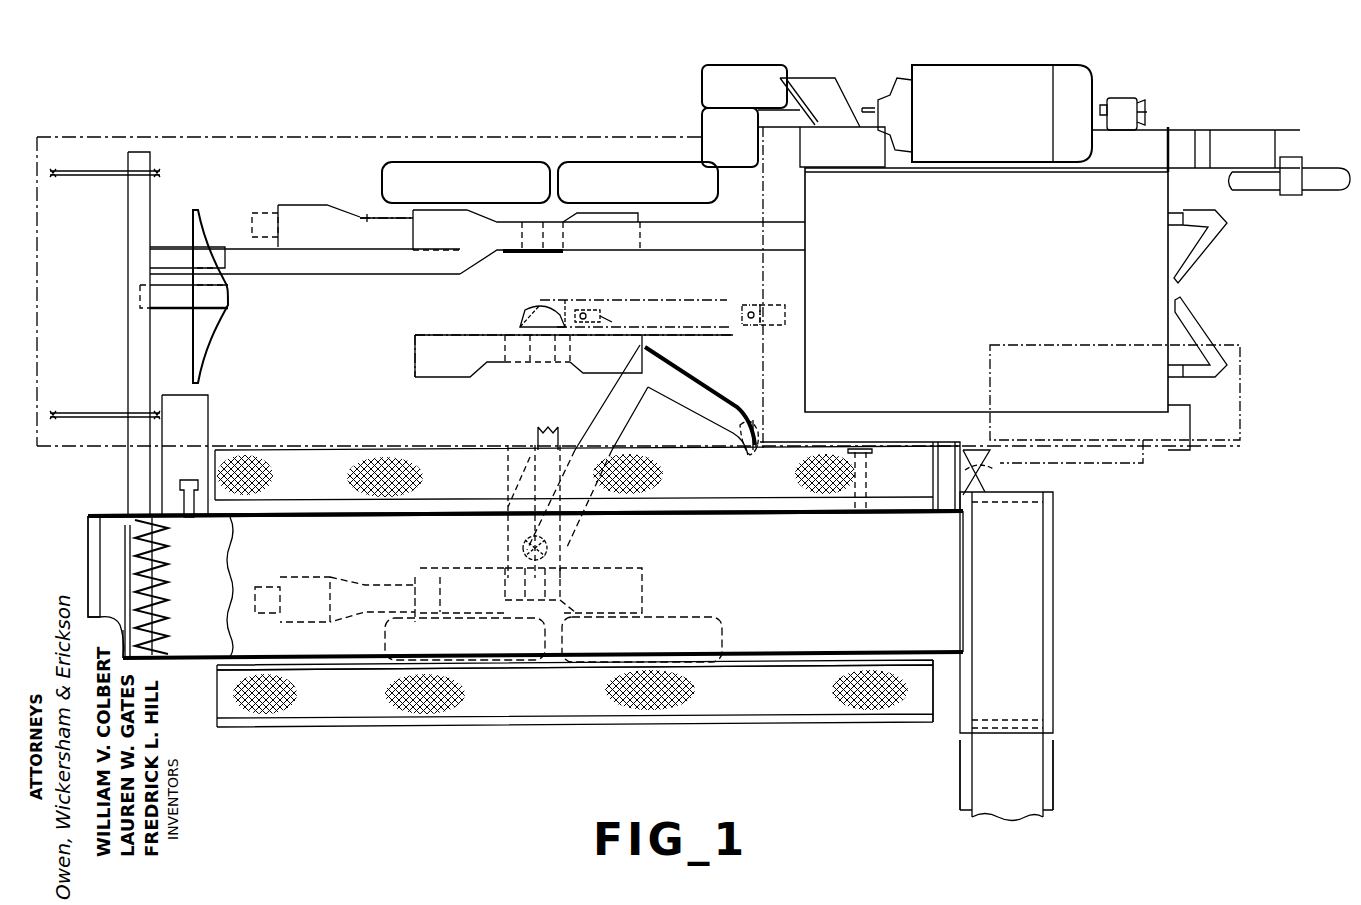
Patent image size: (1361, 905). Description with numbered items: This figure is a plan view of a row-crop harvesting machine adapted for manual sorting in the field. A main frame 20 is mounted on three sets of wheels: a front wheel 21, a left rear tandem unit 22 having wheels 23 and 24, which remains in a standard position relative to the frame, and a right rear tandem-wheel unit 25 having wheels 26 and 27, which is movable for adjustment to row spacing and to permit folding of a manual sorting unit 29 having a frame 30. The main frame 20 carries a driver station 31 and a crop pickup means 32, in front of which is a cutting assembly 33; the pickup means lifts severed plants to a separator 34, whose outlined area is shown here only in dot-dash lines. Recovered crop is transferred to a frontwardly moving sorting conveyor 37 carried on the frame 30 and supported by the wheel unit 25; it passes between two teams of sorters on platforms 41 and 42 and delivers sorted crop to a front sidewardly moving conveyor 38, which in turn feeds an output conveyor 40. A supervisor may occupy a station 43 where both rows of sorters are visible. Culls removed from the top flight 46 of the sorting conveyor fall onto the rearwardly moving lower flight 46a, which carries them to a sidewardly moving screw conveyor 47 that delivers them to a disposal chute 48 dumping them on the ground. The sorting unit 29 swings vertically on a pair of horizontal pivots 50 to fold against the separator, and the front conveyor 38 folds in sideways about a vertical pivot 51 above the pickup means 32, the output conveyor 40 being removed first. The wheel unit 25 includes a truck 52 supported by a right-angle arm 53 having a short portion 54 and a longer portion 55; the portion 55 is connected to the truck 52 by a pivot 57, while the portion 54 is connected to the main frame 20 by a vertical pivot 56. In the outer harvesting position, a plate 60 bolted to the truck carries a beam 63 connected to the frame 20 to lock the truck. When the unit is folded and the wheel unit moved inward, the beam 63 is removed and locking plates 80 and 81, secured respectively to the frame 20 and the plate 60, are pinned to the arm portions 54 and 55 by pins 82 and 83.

The main frame 20 is at (819, 410).
The front wheel 21 is at (1322, 168).
The left rear tandem unit 22 is at (561, 142).
The wheel 23 is at (383, 181).
The wheel 24 is at (636, 166).
The right rear tandem-wheel unit 25 is at (510, 372).
The wheel 26 is at (383, 645).
The wheel 27 is at (722, 641).
The manual sorting unit 29 is at (357, 746).
The frame 30 is at (208, 668).
The driver station 31 is at (703, 120).
The crop pickup means 32 is at (1180, 392).
The cutting assembly 33 is at (1185, 306).
The separator 34 is at (421, 135).
The sorting conveyor 37 is at (420, 514).
The front sidewardly moving conveyor 38 is at (990, 353).
The output conveyor 40 is at (1035, 772).
The platform 41 is at (490, 705).
The platform 42 is at (490, 468).
The station 43 is at (916, 707).
The top flight 46 is at (525, 568).
The lower flight 46a is at (185, 590).
The screw conveyor 47 is at (172, 608).
The disposal chute 48 is at (165, 500).
The horizontal pivots 50 is at (194, 482).
The vertical pivot 51 is at (990, 468).
The truck 52 is at (645, 591).
The right-angle arm 53 is at (588, 421).
The short portion 54 is at (699, 382).
The longer portion 55 is at (625, 420).
The vertical pivot 56 is at (753, 450).
The pivot 57 is at (532, 310).
The plate 60 is at (524, 318).
The beam 63 is at (498, 530).
The locking plate 80 is at (768, 305).
The locking plate 81 is at (565, 300).
The pin 82 is at (750, 308).
The pin 83 is at (592, 312).